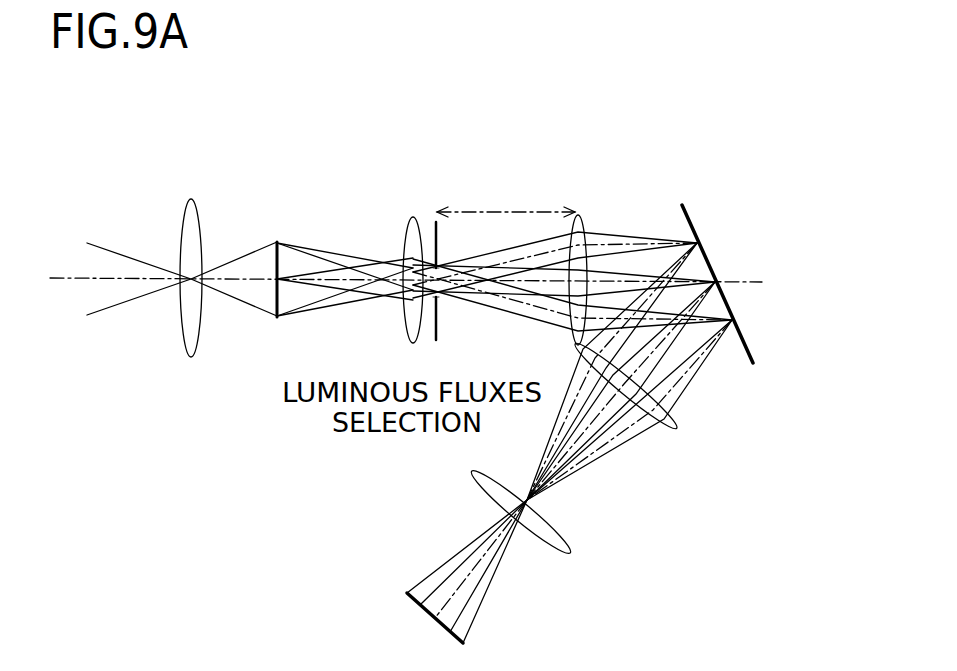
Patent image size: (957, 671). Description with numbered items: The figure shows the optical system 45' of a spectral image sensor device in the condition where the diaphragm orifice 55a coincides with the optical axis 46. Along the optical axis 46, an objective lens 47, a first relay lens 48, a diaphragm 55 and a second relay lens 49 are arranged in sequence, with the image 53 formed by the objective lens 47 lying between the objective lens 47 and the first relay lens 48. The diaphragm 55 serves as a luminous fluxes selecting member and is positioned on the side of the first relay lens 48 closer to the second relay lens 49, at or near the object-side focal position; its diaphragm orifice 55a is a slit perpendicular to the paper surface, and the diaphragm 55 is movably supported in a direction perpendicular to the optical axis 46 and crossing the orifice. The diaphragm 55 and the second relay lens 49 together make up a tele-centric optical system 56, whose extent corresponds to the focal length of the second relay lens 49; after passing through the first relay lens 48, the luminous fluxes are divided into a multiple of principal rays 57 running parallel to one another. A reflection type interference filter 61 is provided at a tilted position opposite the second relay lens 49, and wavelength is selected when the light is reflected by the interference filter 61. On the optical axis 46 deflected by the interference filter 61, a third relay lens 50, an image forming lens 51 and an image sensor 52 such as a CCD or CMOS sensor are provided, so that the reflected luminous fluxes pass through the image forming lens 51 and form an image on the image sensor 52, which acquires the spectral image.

The optical system 45' is at (406, 187).
The optical axis 46 is at (87, 280).
The objective lens 47 is at (203, 228).
The first relay lens 48 is at (405, 223).
The second relay lens 49 is at (582, 214).
The third relay lens 50 is at (677, 428).
The image forming lens 51 is at (571, 553).
The image sensor 52 is at (407, 595).
The image 53 is at (275, 297).
The diaphragm 55 is at (440, 330).
The diaphragm orifice 55a is at (441, 268).
The tele-centric optical system 56 is at (531, 180).
The principal rays 57 is at (612, 237).
The interference filter 61 is at (690, 220).